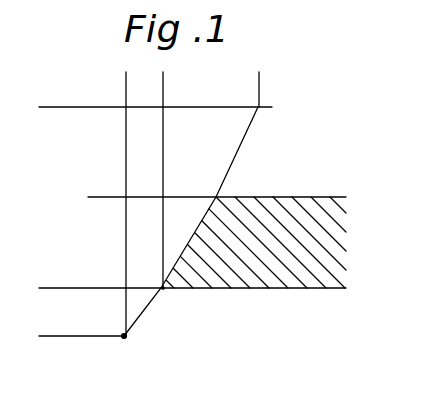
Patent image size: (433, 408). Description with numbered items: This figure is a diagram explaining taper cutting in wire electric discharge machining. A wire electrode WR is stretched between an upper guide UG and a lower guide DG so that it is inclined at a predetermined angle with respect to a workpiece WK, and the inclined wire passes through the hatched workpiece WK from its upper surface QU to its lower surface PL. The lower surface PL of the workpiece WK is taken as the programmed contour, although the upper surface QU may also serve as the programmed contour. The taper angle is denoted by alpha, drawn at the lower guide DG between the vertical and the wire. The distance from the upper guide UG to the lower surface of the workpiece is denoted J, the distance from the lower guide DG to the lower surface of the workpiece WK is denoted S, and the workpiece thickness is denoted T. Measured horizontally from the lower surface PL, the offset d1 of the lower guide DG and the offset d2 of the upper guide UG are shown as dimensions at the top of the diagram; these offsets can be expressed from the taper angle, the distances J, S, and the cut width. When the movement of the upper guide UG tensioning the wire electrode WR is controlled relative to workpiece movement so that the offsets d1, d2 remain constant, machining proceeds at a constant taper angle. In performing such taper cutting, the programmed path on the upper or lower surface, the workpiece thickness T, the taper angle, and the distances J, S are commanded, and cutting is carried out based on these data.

The upper guide UG is at (272, 107).
The wire electrode WR is at (238, 140).
The upper surface of the workpiece QU is at (216, 197).
The workpiece WK is at (316, 288).
The lower surface of the workpiece PL is at (163, 290).
The lower guide DG is at (127, 336).
The distance from the upper guide to the lower surface of the workpiece J is at (54, 107).
The distance from the lower guide to the lower surface of the workpiece S is at (54, 288).
The workpiece thickness T is at (97, 197).
The offset of the lower guide d1 is at (98, 83).
The offset of the upper guide d2 is at (259, 83).